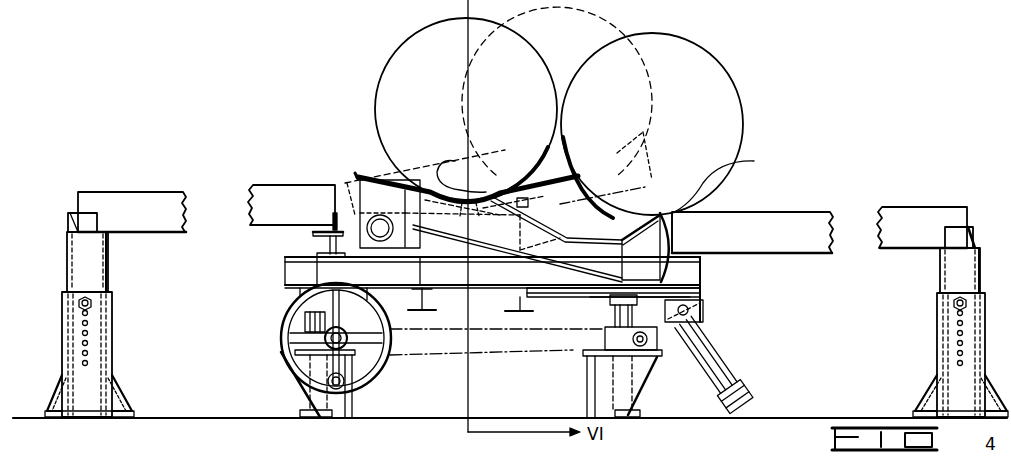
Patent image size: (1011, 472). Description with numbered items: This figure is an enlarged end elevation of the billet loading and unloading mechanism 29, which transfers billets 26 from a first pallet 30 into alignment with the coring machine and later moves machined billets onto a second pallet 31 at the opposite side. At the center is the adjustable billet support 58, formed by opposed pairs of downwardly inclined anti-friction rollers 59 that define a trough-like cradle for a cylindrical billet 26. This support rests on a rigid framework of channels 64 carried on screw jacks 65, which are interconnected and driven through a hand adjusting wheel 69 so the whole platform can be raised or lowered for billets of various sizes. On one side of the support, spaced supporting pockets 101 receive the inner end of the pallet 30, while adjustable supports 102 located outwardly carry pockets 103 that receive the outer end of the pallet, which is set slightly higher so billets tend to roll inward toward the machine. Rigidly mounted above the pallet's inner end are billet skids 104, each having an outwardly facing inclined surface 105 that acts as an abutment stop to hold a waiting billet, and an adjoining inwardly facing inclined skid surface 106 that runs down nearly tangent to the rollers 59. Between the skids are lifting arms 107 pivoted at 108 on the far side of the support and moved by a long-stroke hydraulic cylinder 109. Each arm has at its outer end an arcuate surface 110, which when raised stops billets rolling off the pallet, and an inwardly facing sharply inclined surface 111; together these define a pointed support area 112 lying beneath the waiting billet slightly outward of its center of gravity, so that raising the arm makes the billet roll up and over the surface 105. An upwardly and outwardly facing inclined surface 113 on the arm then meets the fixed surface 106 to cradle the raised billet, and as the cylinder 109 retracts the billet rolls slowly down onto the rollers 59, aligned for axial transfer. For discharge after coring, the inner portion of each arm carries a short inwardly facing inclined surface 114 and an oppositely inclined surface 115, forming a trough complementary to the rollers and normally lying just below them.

The billet 26 is at (683, 58).
The billet loading and unloading mechanism 29 is at (492, 289).
The first pallet 30 is at (893, 236).
The second pallet 31 is at (122, 220).
The adjustable billet support 58 is at (473, 226).
The anti-friction rollers 59 is at (529, 198).
The channels 64 is at (392, 277).
The screw jacks 65 is at (307, 310).
The hand adjusting wheel 69 is at (373, 365).
The supporting pockets 101 is at (312, 234).
The adjustable supports 102 is at (93, 283).
The pockets 103 is at (78, 221).
The billet skids 104 is at (592, 219).
The outwardly facing inclined surface 105 is at (592, 198).
The inwardly facing inclined skid surface 106 is at (549, 148).
The lifting arms 107 is at (570, 254).
The pivot 108 is at (381, 242).
The hydraulic actuator or cylinder 109 is at (730, 377).
The arcuate surface 110 is at (705, 213).
The inwardly facing sharply inclined surface 111 is at (628, 197).
The pointed support area 112 is at (729, 182).
The upwardly and outwardly facing inclined surface 113 is at (563, 138).
The short inwardly facing inclined surface 114 is at (456, 163).
The oppositely inclined surface 115 is at (377, 175).